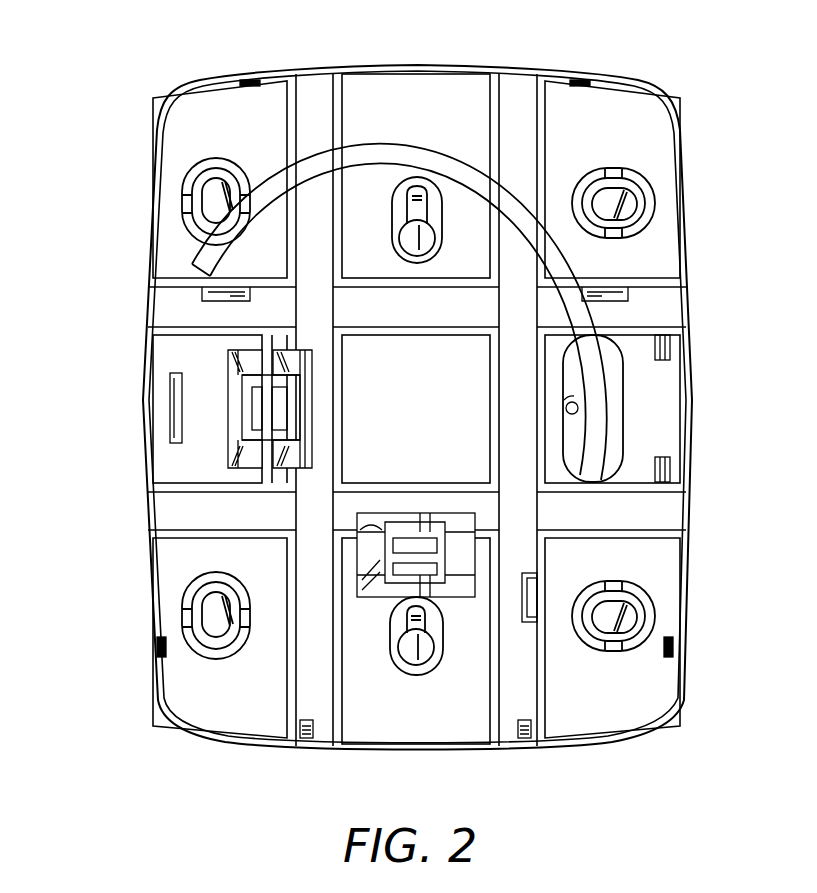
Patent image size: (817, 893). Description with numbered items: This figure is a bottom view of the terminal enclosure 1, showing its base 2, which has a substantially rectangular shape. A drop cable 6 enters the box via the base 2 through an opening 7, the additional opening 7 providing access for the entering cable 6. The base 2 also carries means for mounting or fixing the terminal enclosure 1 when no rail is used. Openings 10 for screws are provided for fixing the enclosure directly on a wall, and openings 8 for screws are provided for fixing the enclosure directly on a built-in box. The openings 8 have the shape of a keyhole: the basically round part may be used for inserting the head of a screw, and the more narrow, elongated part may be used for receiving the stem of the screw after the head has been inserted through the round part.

The terminal enclosure 1 is at (742, 103).
The base 2 is at (165, 347).
The drop cable 6 is at (277, 188).
The opening 7 is at (625, 432).
The openings for screws 8 is at (409, 232).
The openings for screws 10 is at (208, 200).